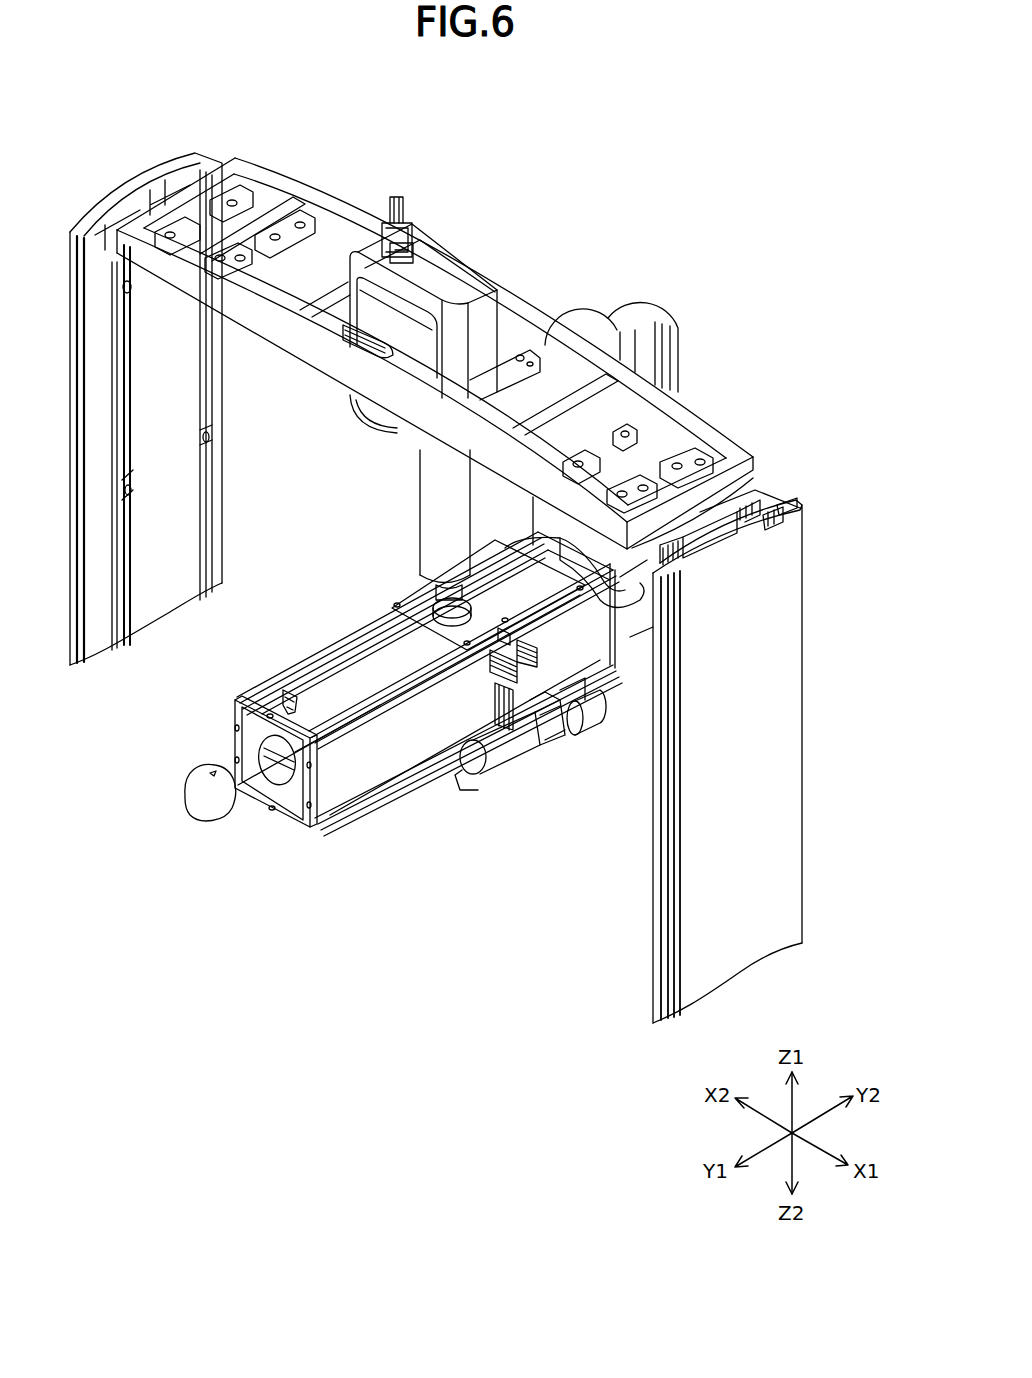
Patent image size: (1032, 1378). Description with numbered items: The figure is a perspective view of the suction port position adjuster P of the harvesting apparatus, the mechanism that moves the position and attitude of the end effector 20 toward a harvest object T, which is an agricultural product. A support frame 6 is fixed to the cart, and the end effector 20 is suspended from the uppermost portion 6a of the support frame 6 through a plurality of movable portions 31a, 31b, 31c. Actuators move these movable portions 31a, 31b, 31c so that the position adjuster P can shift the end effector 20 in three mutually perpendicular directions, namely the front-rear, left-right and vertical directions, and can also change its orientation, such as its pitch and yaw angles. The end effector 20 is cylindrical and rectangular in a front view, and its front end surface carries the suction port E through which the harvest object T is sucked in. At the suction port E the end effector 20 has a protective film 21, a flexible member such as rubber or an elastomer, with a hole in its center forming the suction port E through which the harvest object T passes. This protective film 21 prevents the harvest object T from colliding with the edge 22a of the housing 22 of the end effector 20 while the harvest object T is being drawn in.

The support frame 6 is at (743, 430).
The uppermost portion 6a is at (525, 295).
The suction port position adjuster P is at (675, 302).
The movable portion 31a is at (590, 327).
The movable portion 31b is at (668, 330).
The movable portion 31c is at (518, 556).
The end effector 20 is at (320, 633).
The protective film 21 is at (300, 805).
The housing 22 is at (370, 760).
The edge 22a is at (288, 700).
The suction port E is at (272, 772).
The harvest object T is at (185, 798).